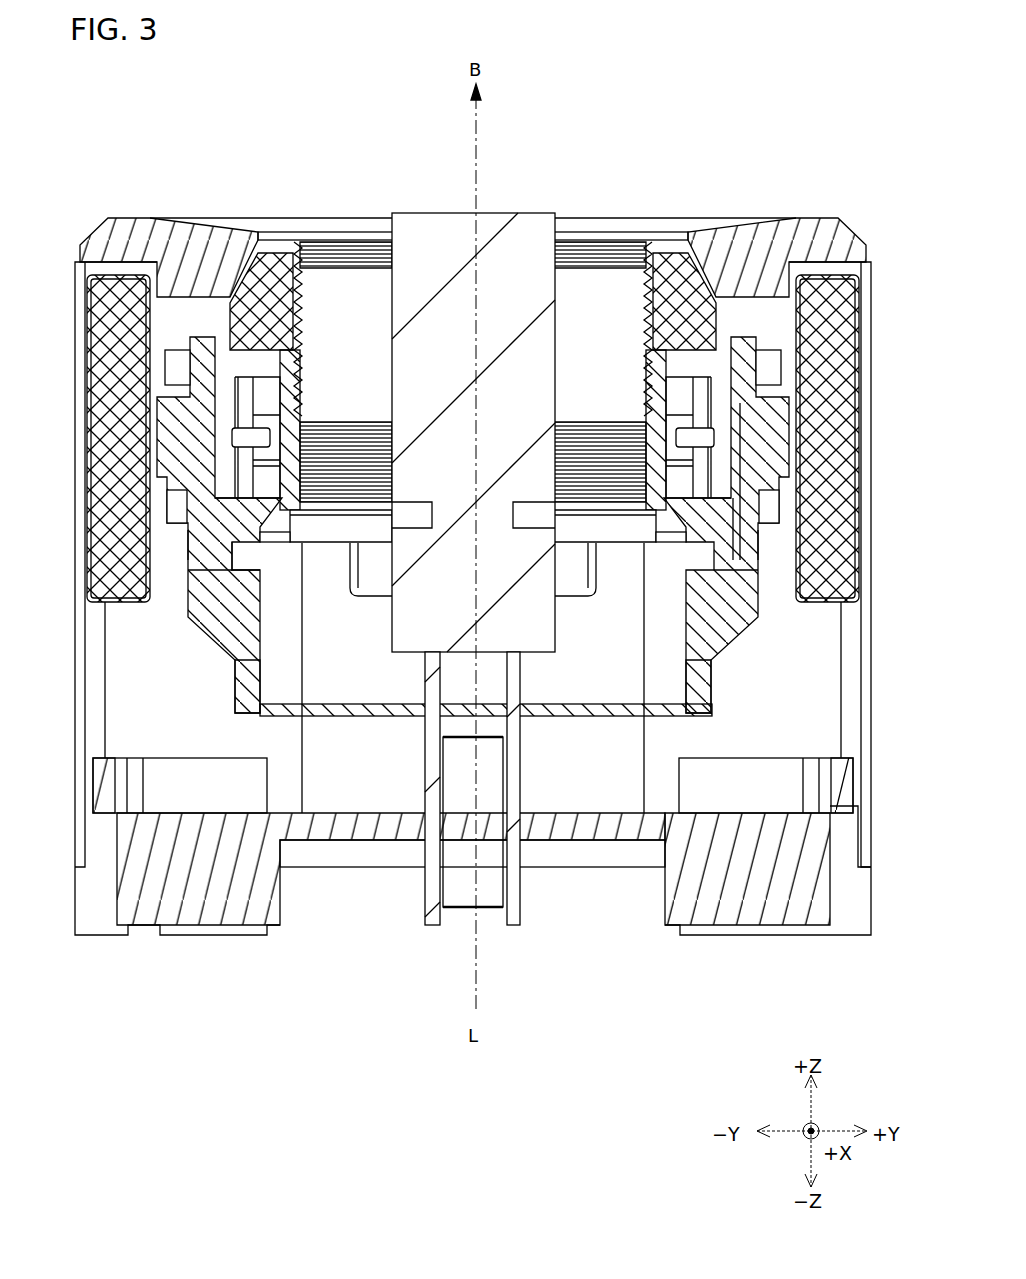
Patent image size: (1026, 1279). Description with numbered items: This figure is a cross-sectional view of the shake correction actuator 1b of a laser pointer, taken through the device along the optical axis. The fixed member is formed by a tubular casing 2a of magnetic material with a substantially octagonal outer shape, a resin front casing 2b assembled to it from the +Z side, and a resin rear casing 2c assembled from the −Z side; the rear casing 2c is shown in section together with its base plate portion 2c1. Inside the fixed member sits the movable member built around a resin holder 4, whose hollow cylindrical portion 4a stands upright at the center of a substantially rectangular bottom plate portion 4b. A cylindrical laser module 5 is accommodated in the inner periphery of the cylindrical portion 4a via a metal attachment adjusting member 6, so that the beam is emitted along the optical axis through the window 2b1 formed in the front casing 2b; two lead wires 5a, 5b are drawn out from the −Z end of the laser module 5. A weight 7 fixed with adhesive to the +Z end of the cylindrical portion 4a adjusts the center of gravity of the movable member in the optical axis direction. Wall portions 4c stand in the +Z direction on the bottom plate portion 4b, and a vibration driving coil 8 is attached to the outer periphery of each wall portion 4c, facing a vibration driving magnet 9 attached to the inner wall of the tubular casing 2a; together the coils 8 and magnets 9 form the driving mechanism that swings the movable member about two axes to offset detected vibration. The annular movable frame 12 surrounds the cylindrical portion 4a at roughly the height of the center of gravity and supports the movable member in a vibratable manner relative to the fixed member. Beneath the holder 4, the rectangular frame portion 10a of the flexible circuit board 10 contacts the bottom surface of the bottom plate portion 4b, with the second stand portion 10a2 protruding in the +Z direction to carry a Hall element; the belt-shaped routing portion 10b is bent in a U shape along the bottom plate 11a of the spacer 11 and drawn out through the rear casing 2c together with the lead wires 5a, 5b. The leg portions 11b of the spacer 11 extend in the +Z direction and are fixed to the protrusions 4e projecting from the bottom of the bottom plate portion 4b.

The shake correction actuator 1b is at (775, 162).
The tubular casing 2a is at (80, 712).
The front casing 2b is at (88, 241).
The window 2b1 is at (268, 240).
The rear casing 2c is at (118, 888).
The base plate portion 2c1 is at (365, 798).
The holder 4 is at (200, 336).
The cylindrical portion 4a is at (296, 300).
The bottom plate portion 4b is at (272, 536).
The wall portions 4c is at (236, 430).
The protrusion 4e is at (190, 546).
The laser module 5 is at (447, 213).
The lead wire 5a is at (424, 905).
The lead wire 5b is at (522, 905).
The attachment adjusting member 6 is at (580, 285).
The weight 7 is at (665, 290).
The vibration driving coil 8 is at (172, 378).
The vibration driving magnet 9 is at (110, 310).
The flexible circuit board 10 is at (346, 580).
The rectangular frame portion 10a is at (236, 560).
The second stand portion 10a2 is at (746, 460).
The routing portion 10b is at (466, 906).
The spacer 11 is at (125, 770).
The bottom plate 11a is at (596, 707).
The leg portions 11b is at (228, 690).
The movable frame 12 is at (236, 480).